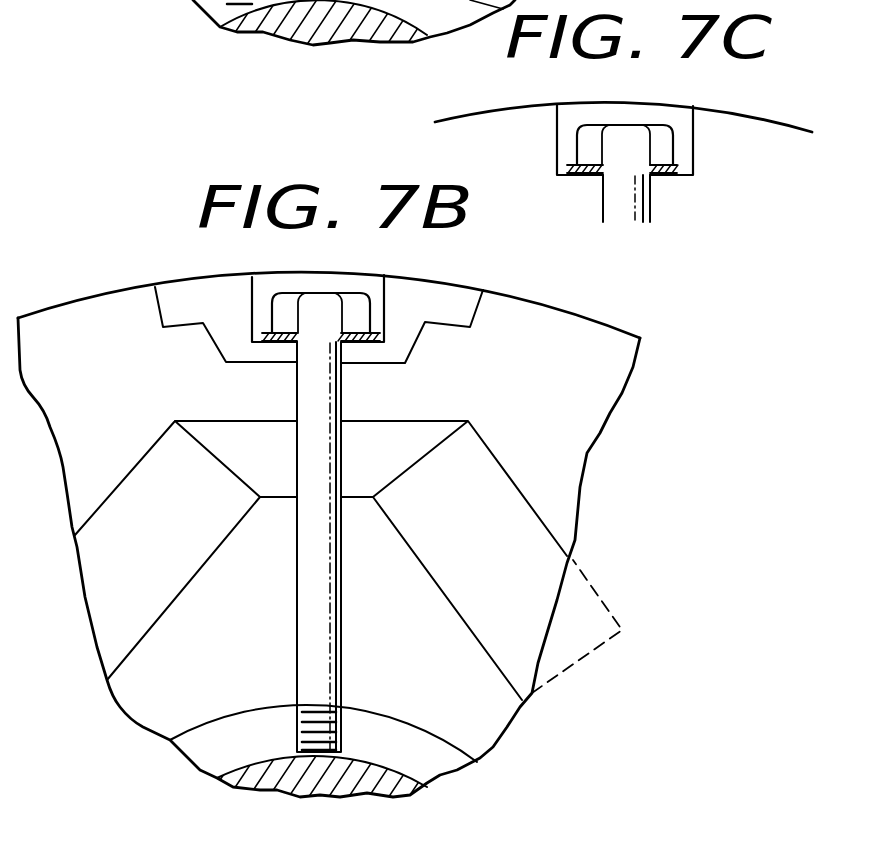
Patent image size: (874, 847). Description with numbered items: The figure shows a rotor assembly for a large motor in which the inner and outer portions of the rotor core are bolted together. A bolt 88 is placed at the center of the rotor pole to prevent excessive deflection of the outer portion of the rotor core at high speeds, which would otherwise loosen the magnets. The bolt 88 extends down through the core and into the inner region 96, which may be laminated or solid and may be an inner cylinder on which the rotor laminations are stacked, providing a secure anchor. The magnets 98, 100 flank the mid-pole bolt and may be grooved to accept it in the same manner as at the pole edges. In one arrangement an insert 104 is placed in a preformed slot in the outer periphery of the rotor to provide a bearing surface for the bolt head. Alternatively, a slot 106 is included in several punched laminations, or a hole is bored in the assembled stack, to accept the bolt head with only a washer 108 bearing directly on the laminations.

In FIG. 7C, the bolt 88 is at (643, 197).
In FIG. 7B, the bolt 88 is at (334, 626).
In FIG. 7B, the inner region 96 is at (256, 755).
In FIG. 7B, the magnet 98 is at (188, 519).
In FIG. 7B, the magnet 100 is at (478, 535).
In FIG. 7B, the insert 104 is at (226, 314).
In FIG. 7C, the slot 106 is at (605, 118).
In FIG. 7C, the washer 108 is at (673, 175).